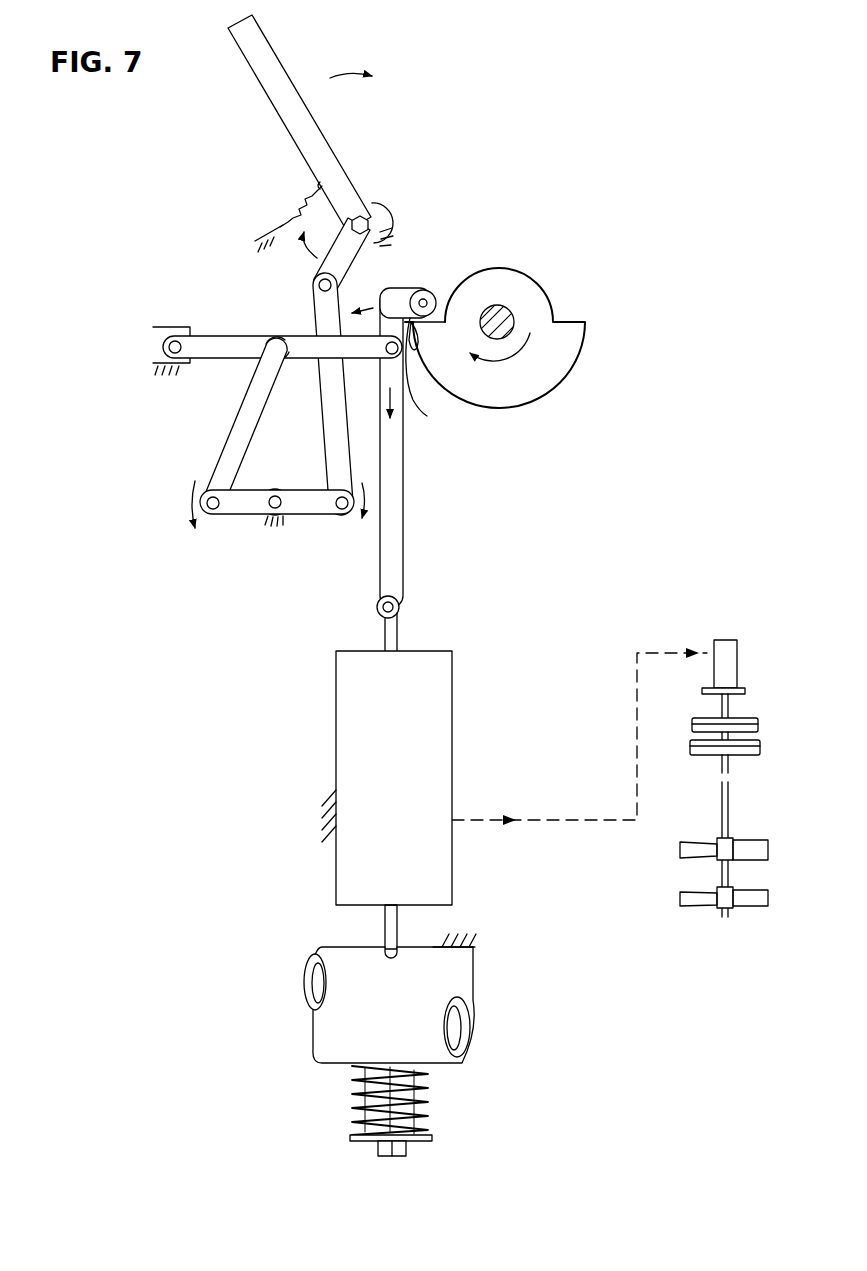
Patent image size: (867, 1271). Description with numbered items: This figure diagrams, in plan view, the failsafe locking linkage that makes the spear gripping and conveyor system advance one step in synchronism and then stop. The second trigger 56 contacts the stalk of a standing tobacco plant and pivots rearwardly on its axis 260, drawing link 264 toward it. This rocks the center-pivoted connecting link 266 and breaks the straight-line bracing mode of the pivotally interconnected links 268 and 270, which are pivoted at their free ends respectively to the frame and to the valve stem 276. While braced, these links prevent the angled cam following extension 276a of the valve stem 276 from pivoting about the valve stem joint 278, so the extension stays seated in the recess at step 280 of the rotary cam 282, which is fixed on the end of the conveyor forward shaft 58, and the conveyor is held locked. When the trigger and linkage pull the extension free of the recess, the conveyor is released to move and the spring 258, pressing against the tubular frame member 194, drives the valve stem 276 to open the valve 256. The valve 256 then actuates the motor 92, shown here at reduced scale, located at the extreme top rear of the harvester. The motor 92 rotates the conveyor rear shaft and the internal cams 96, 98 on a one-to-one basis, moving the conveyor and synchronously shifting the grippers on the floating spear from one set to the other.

The second trigger 56 is at (273, 108).
The conveyor forward shaft 58 is at (510, 310).
The motor 92 is at (714, 645).
The internal cam 96 is at (692, 725).
The internal cam 98 is at (692, 752).
The tubular frame member 194 is at (470, 982).
The valve 256 is at (336, 763).
The spring 258 is at (430, 1108).
The axis 260 is at (379, 215).
The link 264 is at (323, 460).
The connecting link 266 is at (300, 520).
The interconnecting link 268 is at (228, 335).
The interconnecting link 270 is at (310, 335).
The valve stem 276 is at (400, 504).
The cam following extension 276a is at (384, 292).
The valve stem joint 278 is at (399, 606).
The step 280 is at (443, 378).
The rotary cam 282 is at (550, 398).